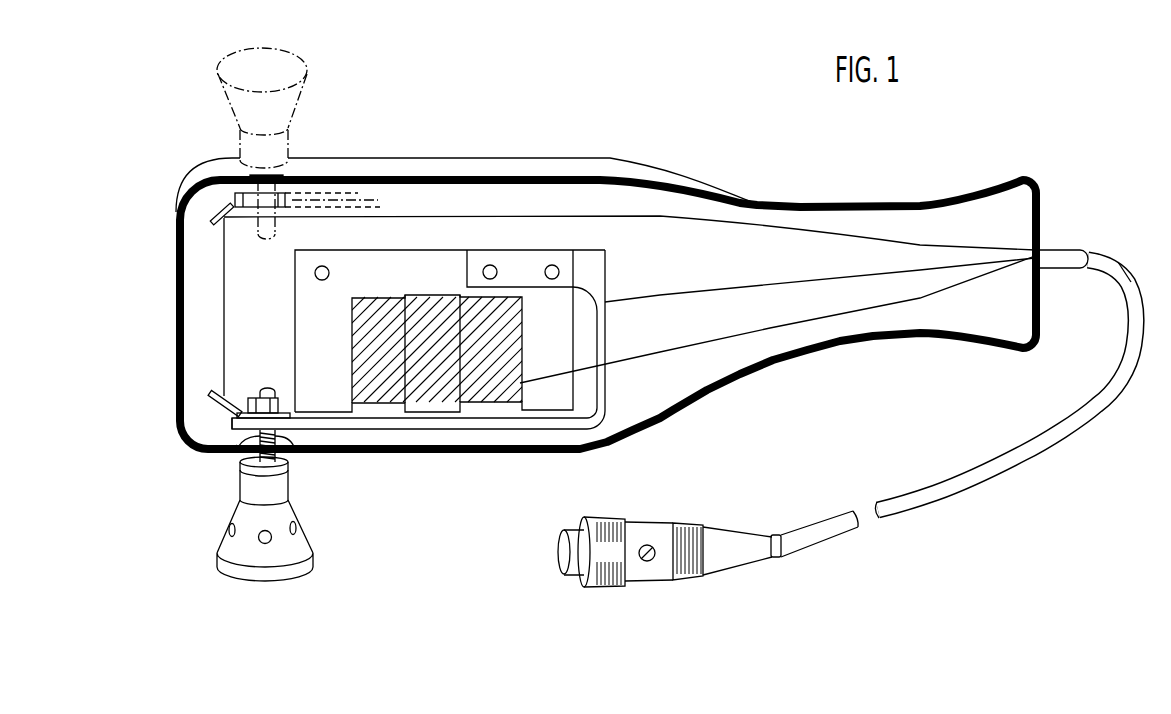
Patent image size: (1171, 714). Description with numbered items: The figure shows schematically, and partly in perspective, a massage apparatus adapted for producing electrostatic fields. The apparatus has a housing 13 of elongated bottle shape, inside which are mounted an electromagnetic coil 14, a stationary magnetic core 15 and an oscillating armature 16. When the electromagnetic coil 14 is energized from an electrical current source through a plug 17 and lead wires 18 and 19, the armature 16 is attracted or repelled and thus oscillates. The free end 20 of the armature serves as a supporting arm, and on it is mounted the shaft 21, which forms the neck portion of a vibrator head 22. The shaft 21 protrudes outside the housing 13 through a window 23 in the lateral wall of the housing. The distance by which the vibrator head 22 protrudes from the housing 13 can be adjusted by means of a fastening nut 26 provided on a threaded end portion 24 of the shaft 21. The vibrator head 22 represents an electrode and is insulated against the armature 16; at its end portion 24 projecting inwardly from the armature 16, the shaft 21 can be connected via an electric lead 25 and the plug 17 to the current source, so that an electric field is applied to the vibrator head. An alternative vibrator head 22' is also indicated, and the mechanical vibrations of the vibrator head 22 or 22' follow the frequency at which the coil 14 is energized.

The housing 13 is at (174, 273).
The electromagnetic coil 14 is at (443, 313).
The stationary magnetic core 15 is at (390, 257).
The oscillating armature 16 is at (383, 428).
The plug 17 is at (648, 581).
The lead wire 18 is at (700, 343).
The lead wire 19 is at (727, 292).
The free end of the armature 20 is at (221, 436).
The shaft 21 is at (307, 452).
The vibrator head 22 is at (265, 539).
The vibrator head 22' is at (295, 132).
The window 23 is at (238, 447).
The threaded end portion 24 is at (267, 388).
The electric lead 25 is at (737, 225).
The fastening nut 26 is at (247, 403).